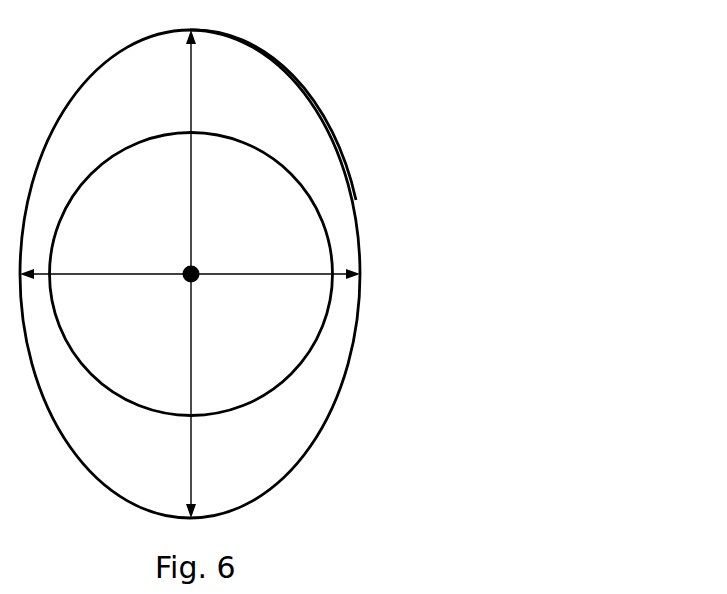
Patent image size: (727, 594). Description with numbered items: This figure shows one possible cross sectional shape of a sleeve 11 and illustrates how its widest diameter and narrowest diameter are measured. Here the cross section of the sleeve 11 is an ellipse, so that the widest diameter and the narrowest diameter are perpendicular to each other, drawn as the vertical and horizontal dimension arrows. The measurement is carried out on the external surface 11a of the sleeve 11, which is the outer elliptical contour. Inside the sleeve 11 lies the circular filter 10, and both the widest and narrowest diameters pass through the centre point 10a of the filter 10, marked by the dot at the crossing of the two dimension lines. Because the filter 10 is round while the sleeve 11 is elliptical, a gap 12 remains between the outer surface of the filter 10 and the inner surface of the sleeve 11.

The filter 10 is at (326, 230).
The centre point of the filter 10a is at (191, 274).
The sleeve 11 is at (358, 323).
The external surface of the sleeve 11a is at (345, 163).
The gap 12 is at (266, 122).